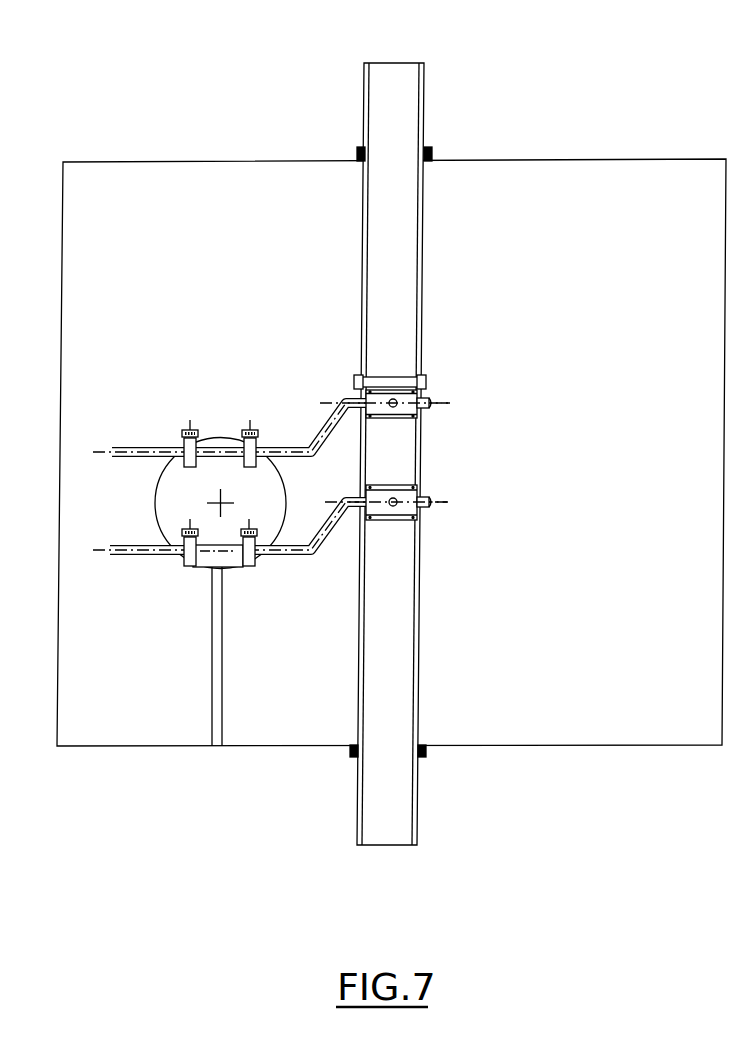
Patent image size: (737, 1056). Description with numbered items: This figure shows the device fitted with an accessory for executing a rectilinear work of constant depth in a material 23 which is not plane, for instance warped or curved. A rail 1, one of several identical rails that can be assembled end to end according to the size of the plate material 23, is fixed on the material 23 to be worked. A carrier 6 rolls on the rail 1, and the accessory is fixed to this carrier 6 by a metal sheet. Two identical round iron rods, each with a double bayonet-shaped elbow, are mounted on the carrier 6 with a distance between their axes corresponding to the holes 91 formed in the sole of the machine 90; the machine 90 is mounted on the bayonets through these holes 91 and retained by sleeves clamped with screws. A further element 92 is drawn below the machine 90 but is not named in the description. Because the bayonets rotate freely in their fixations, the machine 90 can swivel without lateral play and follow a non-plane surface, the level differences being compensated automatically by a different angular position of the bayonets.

The rail 1 is at (394, 87).
The material to be worked 23 is at (638, 185).
The carrier 6 is at (392, 453).
The machine 90 is at (153, 521).
The holes 91 is at (213, 438).
The rod 92 is at (222, 740).